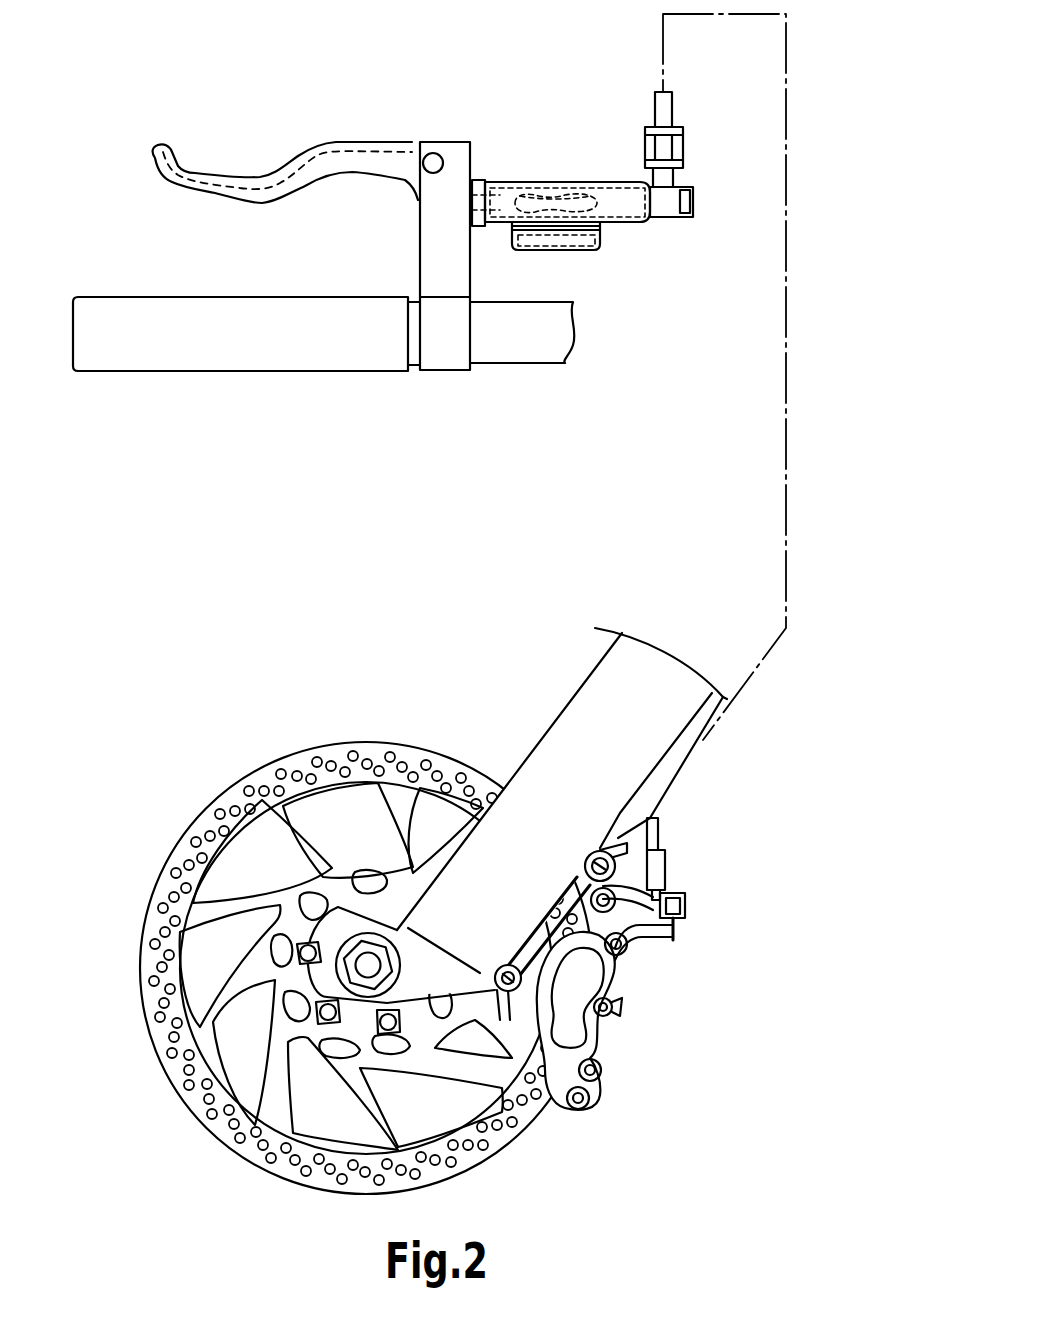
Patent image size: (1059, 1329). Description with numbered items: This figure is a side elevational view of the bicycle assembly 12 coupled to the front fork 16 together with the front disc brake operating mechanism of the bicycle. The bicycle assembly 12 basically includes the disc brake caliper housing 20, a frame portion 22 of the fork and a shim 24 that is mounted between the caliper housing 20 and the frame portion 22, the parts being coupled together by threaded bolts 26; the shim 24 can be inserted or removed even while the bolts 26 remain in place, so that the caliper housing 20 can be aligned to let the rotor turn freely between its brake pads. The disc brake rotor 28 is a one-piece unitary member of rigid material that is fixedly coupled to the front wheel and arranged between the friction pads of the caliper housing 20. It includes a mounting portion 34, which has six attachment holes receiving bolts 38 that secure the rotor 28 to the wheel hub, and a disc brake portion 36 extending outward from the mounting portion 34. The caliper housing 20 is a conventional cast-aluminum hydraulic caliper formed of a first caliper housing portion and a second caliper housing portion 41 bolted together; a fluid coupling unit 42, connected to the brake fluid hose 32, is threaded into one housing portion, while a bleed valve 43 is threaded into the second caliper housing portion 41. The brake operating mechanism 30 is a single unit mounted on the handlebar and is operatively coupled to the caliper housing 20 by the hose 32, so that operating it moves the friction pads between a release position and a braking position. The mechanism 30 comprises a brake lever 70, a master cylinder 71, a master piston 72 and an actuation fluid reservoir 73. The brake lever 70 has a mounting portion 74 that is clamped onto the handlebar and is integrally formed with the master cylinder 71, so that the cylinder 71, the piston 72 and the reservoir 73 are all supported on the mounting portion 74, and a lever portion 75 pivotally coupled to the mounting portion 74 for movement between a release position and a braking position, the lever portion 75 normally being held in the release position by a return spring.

The bicycle assembly 12 is at (737, 839).
The front fork 16 is at (556, 720).
The disc brake caliper housing 20 is at (618, 975).
The frame portion 22 is at (620, 840).
The shim 24 is at (622, 855).
The threaded bolts 26 is at (508, 968).
The disc brake rotor 28 is at (243, 778).
The brake operating mechanism 30 is at (452, 125).
The brake fluid hose 32 is at (673, 112).
The mounting portion 34 is at (249, 1008).
The disc brake portion 36 is at (303, 765).
The bolts 38 is at (383, 1022).
The second caliper housing portion 41 is at (587, 980).
The fluid coupling unit 42 is at (668, 878).
The bleed valve 43 is at (685, 928).
The brake lever 70 is at (308, 140).
The master cylinder 71 is at (528, 190).
The master piston 72 is at (556, 195).
The actuation fluid reservoir 73 is at (582, 246).
The mounting portion 74 is at (418, 210).
The lever portion 75 is at (212, 197).